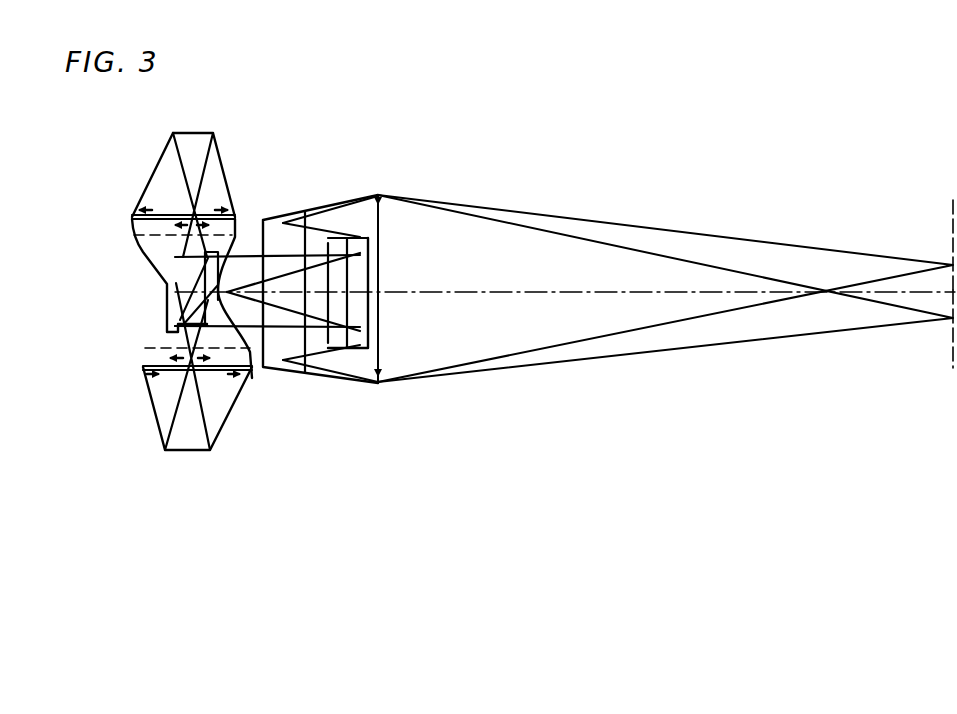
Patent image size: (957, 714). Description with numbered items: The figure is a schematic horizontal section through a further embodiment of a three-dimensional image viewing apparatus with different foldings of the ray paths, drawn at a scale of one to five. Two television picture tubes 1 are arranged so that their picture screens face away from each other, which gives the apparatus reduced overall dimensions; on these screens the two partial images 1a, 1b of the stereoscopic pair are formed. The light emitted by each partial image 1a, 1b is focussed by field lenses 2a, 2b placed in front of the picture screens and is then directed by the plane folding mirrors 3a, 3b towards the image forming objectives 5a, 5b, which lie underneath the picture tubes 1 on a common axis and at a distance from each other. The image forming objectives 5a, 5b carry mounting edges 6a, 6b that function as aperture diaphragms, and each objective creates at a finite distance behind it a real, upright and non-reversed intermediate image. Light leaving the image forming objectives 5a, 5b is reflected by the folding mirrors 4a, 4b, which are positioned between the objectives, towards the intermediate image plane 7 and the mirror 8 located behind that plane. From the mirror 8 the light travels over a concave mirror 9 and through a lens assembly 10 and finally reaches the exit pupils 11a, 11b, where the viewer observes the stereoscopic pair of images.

The television picture tube 1 is at (160, 268).
The partial image 1a is at (132, 217).
The partial image 1b is at (145, 357).
The field lens 2a is at (163, 207).
The field lens 2b is at (167, 373).
The plane folding mirror 3a is at (187, 133).
The plane folding mirror 3b is at (200, 452).
The plane folding mirror 4a is at (185, 268).
The plane folding mirror 4b is at (167, 328).
The image forming objective 5a is at (209, 225).
The mounting edge 6a is at (237, 189).
The image forming objective 5b is at (217, 377).
The mounting edge 6b is at (232, 406).
The intermediate image plane 7 is at (372, 270).
The mirror 8 is at (372, 297).
The concave mirror 9 is at (282, 217).
The lens assembly 10 is at (383, 228).
The exit pupil 11a is at (952, 322).
The exit pupil 11b is at (953, 263).